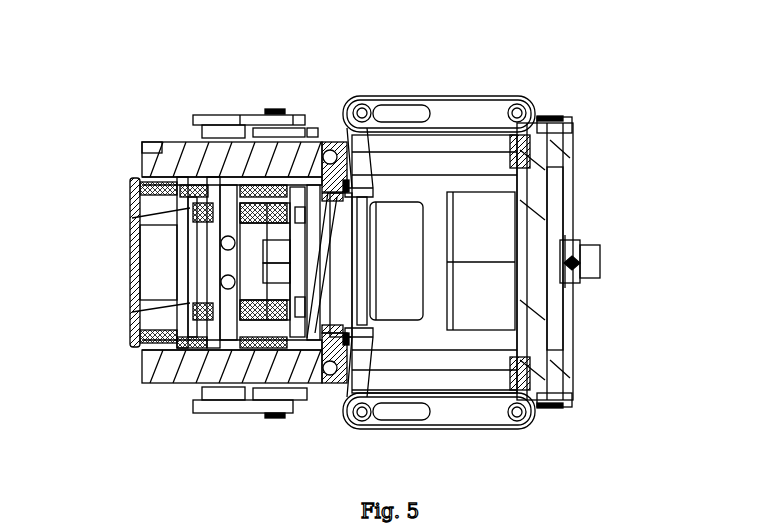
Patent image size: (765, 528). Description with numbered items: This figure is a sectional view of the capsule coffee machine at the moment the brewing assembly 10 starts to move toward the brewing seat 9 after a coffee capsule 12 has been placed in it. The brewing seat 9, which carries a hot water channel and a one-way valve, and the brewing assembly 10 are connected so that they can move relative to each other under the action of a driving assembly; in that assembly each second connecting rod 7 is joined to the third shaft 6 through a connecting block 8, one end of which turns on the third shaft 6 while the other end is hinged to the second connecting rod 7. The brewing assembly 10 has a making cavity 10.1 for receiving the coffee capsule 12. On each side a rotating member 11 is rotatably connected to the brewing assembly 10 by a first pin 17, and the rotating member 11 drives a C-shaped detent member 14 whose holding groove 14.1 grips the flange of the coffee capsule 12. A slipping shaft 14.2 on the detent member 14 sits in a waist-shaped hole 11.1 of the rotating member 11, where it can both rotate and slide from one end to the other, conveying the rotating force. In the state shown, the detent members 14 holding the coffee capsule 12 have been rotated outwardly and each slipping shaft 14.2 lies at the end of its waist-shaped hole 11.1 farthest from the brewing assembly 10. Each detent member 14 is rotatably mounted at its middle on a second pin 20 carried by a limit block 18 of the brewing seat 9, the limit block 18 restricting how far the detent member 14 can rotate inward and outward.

The third shaft 6 is at (218, 135).
The second connecting rod 7 is at (321, 130).
The connecting block 8 is at (260, 112).
The brewing seat 9 is at (253, 260).
The brewing assembly 10 is at (533, 240).
The making cavity 10.1 is at (500, 305).
The rotating member 11 is at (474, 112).
The waist-shaped hole 11.1 is at (412, 98).
The coffee capsule 12 is at (403, 293).
The detent member 14 is at (348, 128).
The holding groove 14.1 is at (335, 340).
The slipping shaft 14.2 is at (368, 98).
The first pin 17 is at (526, 100).
The limit block 18 is at (240, 165).
The second pin 20 is at (343, 340).